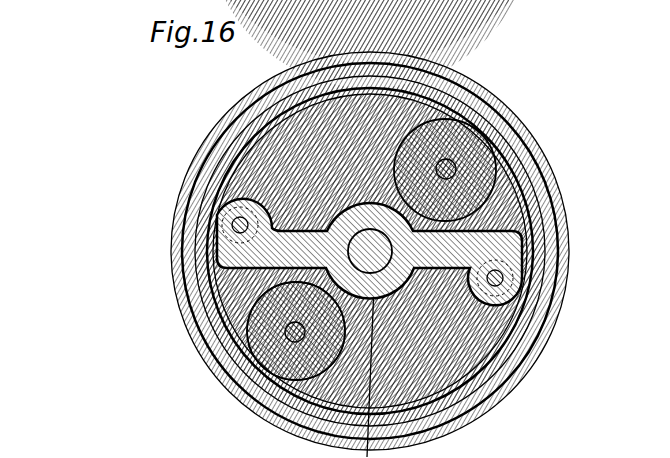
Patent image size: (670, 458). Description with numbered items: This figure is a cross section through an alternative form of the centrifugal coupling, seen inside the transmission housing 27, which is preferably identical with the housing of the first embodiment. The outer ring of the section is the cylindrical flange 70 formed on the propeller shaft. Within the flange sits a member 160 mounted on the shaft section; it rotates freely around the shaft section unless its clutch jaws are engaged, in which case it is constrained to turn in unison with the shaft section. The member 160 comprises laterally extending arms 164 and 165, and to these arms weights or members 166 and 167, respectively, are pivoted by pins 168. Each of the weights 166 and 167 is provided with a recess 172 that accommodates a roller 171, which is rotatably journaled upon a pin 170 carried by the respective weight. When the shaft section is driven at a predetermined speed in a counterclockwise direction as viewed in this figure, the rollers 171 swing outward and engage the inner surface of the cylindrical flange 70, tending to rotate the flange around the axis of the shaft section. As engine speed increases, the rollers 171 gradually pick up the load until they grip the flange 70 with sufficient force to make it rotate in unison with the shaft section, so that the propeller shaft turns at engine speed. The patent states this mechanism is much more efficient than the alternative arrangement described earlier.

The transmission housing 27 is at (466, 82).
The cylindrical flange 70 is at (456, 424).
The member 160 is at (524, 242).
The laterally extending arm 164 is at (218, 252).
The laterally extending arm 165 is at (513, 215).
The weight 166 is at (360, 103).
The weight 167 is at (498, 327).
The pin 168 is at (234, 225).
The pin 170 is at (452, 165).
The roller 171 is at (489, 144).
The recess 172 is at (268, 337).